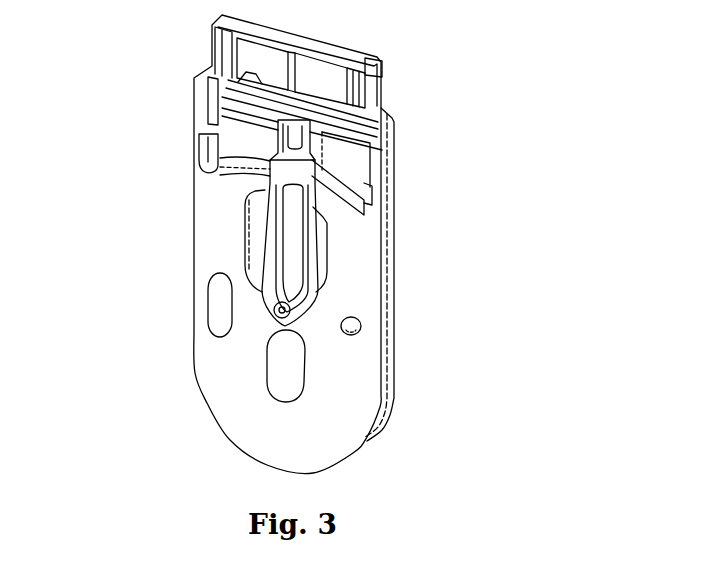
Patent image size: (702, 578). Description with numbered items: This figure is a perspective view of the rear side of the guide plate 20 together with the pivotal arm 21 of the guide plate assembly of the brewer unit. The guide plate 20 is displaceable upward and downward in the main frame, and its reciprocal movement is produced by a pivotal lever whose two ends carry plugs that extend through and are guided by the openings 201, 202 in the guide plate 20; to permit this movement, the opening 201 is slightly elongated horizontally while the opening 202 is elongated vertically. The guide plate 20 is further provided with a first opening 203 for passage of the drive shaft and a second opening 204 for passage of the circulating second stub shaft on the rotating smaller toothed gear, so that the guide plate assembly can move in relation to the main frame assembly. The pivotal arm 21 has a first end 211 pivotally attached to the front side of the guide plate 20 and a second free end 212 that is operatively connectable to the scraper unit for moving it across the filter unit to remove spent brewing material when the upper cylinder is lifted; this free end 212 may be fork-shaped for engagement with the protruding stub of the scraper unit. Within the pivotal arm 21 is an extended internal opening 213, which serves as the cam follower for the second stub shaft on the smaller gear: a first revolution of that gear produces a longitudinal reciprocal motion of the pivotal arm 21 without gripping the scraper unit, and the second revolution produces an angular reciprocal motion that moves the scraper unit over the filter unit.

The guide plate 20 is at (376, 163).
The pivotal arm 21 is at (268, 188).
The opening 201 is at (362, 322).
The opening 202 is at (218, 315).
The first opening 203 is at (277, 372).
The second opening 204 is at (257, 227).
The first end 211 is at (300, 330).
The free end 212 is at (277, 132).
The extended internal opening 213 is at (317, 243).